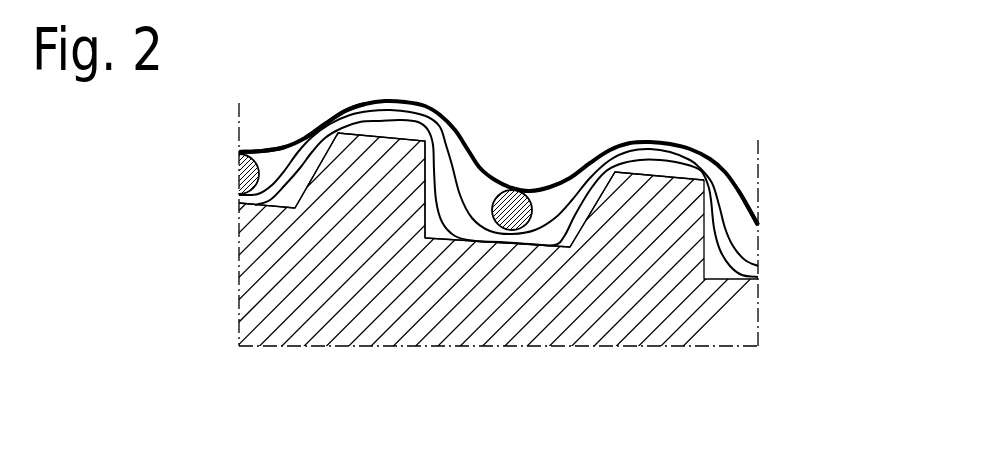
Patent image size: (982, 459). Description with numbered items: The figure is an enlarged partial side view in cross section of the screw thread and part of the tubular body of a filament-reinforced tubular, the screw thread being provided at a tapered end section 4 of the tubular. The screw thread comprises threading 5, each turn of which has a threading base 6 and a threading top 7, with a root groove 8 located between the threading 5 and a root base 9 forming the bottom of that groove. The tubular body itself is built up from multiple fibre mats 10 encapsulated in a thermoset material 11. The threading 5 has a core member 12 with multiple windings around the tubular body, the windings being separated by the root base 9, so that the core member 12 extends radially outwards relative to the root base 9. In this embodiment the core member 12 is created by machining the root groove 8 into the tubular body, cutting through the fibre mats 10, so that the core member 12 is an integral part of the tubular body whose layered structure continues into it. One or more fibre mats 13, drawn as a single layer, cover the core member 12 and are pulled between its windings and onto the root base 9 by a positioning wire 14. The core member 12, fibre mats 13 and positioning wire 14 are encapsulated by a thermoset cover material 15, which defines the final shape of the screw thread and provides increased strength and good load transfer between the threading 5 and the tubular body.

The tapered end section 4 is at (676, 313).
The threading 5 is at (720, 150).
The threading base 6 is at (263, 137).
The threading top 7 is at (331, 93).
The root groove 8 is at (549, 104).
The root base 9 is at (503, 257).
The fibre mats 10 is at (333, 222).
The thermoset material 11 is at (737, 317).
The core member 12 is at (373, 170).
The fibre mats 13 is at (750, 202).
The positioning wire 14 is at (238, 185).
The thermoset cover material 15 is at (666, 150).